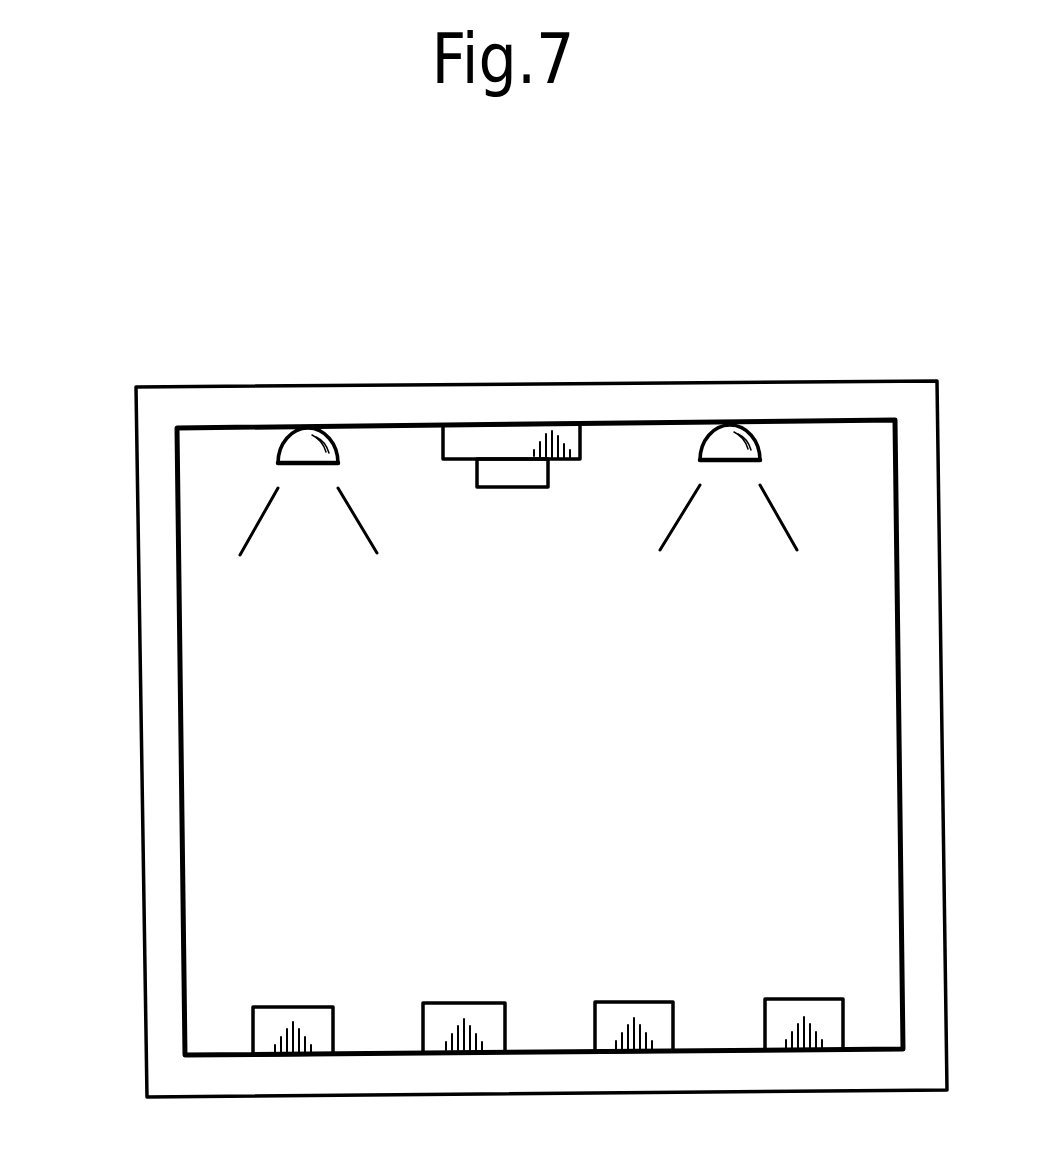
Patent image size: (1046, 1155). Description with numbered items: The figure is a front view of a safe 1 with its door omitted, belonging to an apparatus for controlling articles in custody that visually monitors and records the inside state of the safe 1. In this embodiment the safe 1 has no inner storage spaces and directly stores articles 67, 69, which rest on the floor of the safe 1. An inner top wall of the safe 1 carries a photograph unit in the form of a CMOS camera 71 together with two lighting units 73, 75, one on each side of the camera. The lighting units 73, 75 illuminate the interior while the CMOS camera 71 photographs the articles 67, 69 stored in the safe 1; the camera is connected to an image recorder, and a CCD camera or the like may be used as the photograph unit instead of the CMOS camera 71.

The safe 1 is at (463, 355).
The article 67 is at (287, 1005).
The article 69 is at (462, 1003).
The CMOS camera 71 is at (534, 424).
The lighting unit 73 is at (304, 427).
The lighting unit 75 is at (727, 421).